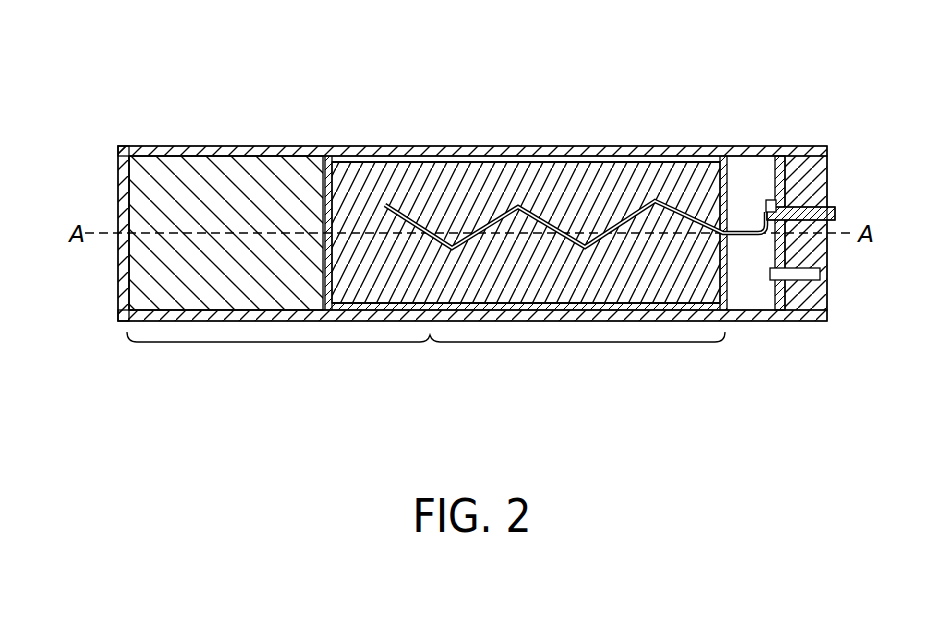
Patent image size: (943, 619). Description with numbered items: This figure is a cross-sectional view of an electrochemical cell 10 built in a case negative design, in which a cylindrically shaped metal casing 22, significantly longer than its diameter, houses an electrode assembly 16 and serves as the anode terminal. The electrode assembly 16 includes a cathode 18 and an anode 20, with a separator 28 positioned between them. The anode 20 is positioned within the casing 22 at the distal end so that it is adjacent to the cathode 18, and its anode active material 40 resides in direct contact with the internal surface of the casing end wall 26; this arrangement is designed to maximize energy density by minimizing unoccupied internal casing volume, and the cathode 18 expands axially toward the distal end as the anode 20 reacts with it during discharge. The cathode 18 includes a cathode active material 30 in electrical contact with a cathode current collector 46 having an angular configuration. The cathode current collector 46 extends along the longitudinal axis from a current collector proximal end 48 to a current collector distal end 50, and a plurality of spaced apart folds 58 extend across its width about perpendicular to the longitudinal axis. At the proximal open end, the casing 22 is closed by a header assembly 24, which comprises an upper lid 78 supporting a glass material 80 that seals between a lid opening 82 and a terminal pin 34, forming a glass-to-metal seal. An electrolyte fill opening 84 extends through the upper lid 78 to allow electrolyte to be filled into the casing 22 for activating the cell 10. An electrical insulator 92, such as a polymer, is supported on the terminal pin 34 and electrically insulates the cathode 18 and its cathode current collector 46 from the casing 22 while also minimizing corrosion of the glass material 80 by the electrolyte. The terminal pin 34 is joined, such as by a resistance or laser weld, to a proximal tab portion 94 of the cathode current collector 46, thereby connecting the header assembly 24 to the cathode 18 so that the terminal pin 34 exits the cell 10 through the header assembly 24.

The electrochemical cell 10 is at (710, 73).
The electrode assembly 16 is at (426, 354).
The cathode 18 is at (585, 300).
The anode 20 is at (245, 162).
The casing 22 is at (240, 322).
The header assembly 24 is at (812, 178).
The end wall 26 is at (125, 165).
The separator 28 is at (535, 161).
The cathode active material 30 is at (472, 183).
The terminal pin 34 is at (838, 213).
The anode active material 40 is at (190, 160).
The cathode current collector 46 is at (700, 213).
The current collector proximal end 48 is at (729, 240).
The current collector distal end 50 is at (412, 215).
The folds 58 is at (590, 226).
The upper lid 78 is at (824, 318).
The glass material 80 is at (818, 228).
The lid opening 82 is at (808, 181).
The electrolyte fill opening 84 is at (818, 274).
The electrical insulator 92 is at (788, 165).
The proximal tab portion 94 is at (768, 178).